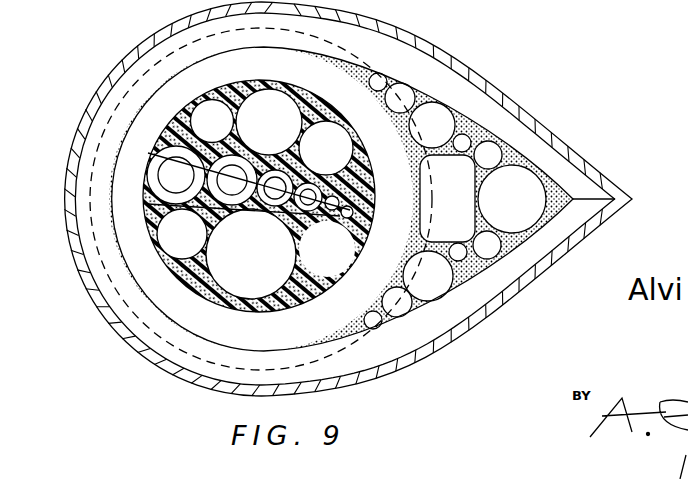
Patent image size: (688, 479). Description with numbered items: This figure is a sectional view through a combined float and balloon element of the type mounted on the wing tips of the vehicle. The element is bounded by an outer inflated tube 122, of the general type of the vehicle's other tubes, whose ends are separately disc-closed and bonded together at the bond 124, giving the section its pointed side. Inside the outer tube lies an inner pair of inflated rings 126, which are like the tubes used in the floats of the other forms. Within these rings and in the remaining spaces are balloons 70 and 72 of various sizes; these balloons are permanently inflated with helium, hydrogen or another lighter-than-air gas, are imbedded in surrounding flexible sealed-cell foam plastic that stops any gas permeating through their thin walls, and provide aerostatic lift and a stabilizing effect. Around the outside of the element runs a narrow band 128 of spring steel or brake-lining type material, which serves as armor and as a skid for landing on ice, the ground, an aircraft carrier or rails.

The narrow band 128 is at (110, 68).
The inner pair of inflated rings 126 is at (283, 80).
The outer inflated tube 122 is at (457, 82).
The bond of the tube ends 124 is at (600, 192).
The balloon 70 is at (338, 161).
The balloon 72 is at (459, 210).